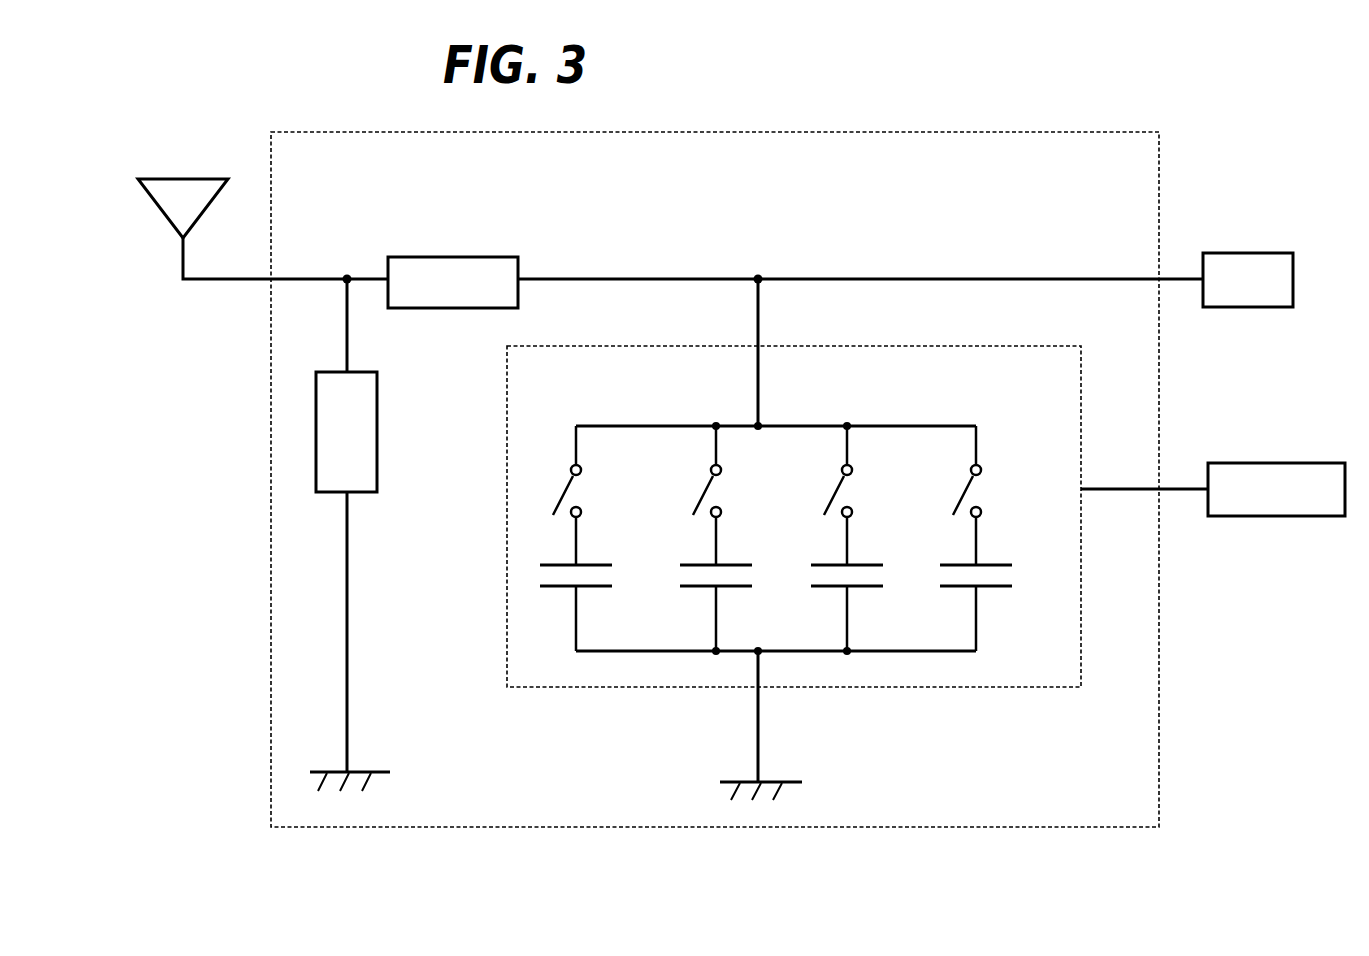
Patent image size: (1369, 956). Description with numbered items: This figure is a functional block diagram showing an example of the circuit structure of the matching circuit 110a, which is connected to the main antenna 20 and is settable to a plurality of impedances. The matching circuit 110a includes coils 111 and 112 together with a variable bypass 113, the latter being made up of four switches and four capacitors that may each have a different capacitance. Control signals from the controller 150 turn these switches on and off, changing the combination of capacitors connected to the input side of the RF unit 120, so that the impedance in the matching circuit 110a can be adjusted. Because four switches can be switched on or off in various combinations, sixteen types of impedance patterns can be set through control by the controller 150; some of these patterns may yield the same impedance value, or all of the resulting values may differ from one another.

The main antenna 20 is at (183, 178).
The matching circuit 110a is at (734, 131).
The coil 111 is at (452, 256).
The coil 112 is at (378, 432).
The variable bypass 113 is at (883, 346).
The RF unit 120 is at (1243, 252).
The controller 150 is at (1272, 462).